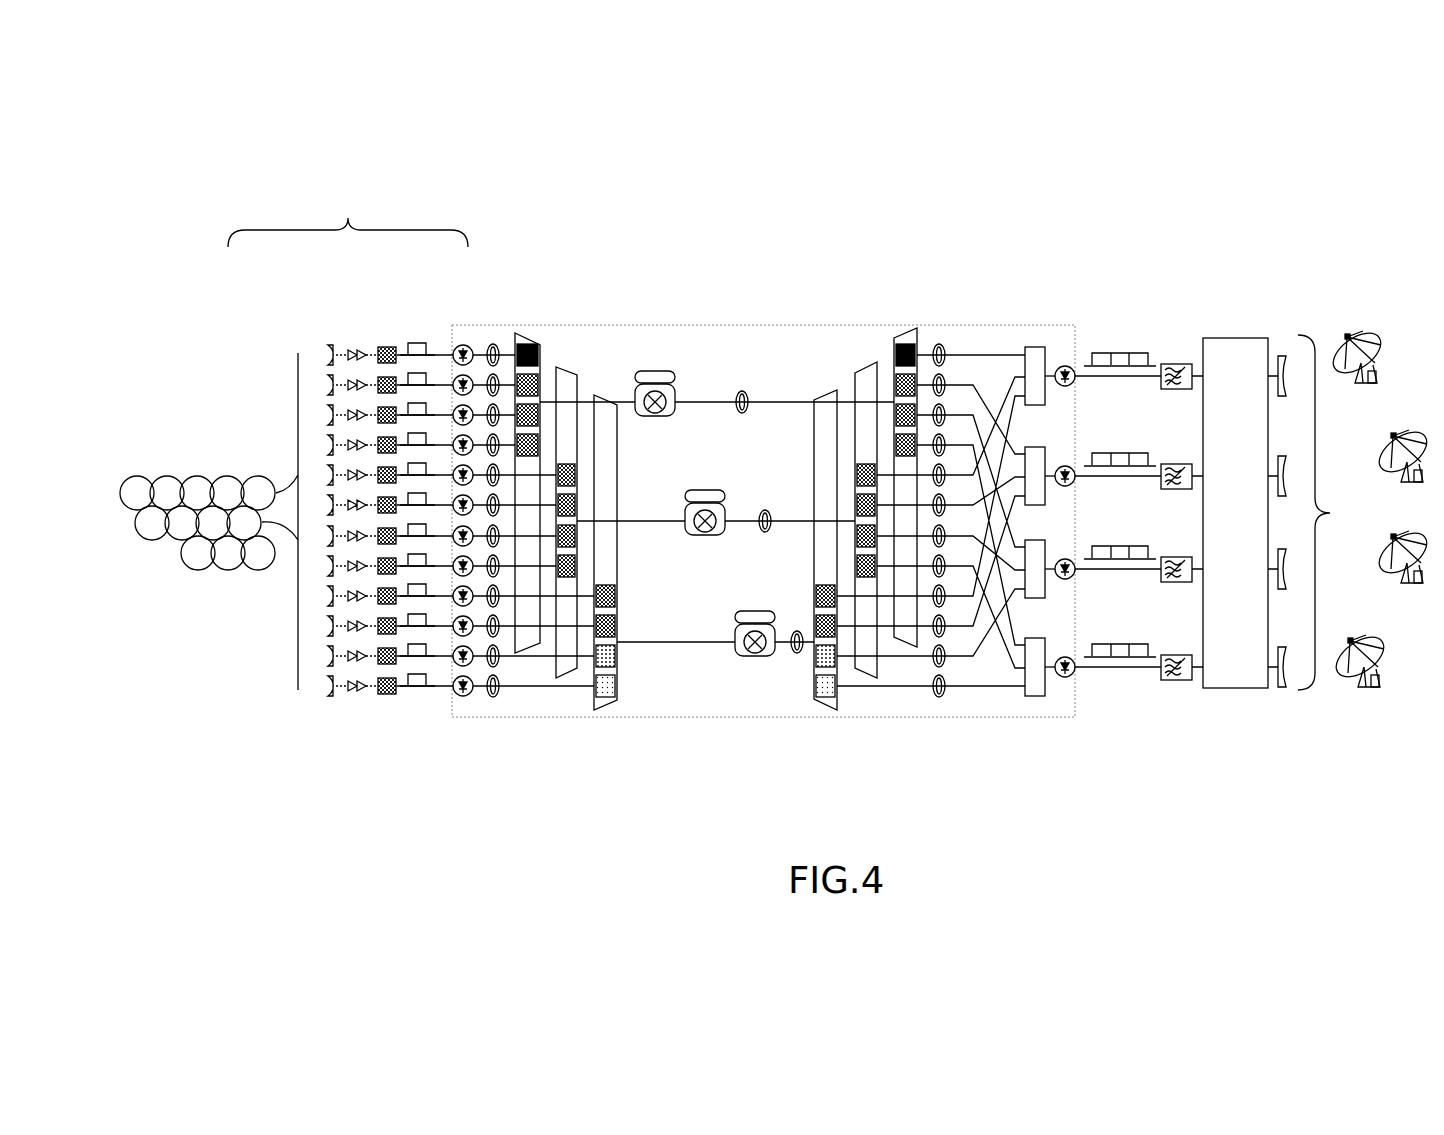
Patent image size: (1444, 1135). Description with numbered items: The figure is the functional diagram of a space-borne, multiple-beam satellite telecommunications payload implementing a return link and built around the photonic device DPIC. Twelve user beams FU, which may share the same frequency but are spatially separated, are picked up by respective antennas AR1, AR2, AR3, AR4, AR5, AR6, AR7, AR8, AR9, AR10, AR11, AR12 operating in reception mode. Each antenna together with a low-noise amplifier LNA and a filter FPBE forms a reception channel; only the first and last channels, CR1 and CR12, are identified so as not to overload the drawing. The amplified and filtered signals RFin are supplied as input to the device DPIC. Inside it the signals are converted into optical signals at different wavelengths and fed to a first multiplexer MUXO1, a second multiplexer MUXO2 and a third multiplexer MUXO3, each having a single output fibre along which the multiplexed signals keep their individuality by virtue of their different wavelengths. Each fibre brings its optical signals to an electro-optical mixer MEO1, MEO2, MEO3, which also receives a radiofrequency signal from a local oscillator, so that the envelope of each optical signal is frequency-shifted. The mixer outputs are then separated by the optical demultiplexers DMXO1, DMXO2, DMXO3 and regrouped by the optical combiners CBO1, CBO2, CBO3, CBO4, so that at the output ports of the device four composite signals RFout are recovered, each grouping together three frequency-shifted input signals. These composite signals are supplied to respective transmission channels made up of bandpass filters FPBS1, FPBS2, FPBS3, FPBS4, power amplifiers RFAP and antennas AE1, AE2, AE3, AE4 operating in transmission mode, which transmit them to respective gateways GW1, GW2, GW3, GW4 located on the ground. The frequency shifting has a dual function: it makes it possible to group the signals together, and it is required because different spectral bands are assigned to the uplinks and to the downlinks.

The user beams FU is at (180, 462).
The reception antenna AR1 is at (326, 355).
The reception antenna AR2 is at (326, 385).
The reception antenna AR3 is at (326, 415).
The reception antenna AR4 is at (326, 445).
The reception antenna AR5 is at (326, 475).
The reception antenna AR6 is at (326, 505).
The reception antenna AR7 is at (326, 536).
The reception antenna AR8 is at (326, 566).
The reception antenna AR9 is at (326, 596).
The reception antenna AR10 is at (326, 626).
The reception antenna AR11 is at (326, 656).
The reception antenna AR12 is at (326, 686).
The reception channel CR1 is at (348, 218).
The reception channel CR12 is at (415, 706).
The low noise amplifier LNA is at (352, 345).
The input band-pass filter FPBE is at (389, 344).
The input radiofrequency signal RFin is at (430, 329).
The first optical multiplexer MUXO1 is at (538, 333).
The second optical multiplexer MUXO2 is at (577, 367).
The third optical multiplexer MUXO3 is at (605, 395).
The electro-optical mixer MEO1 is at (655, 420).
The electro-optical mixer MEO2 is at (705, 537).
The electro-optical mixer MEO3 is at (755, 660).
The optical demultiplexer 1 DMXO1 is at (905, 330).
The optical demultiplexer 2 DMXO2 is at (865, 365).
The optical demultiplexer 3 DMXO3 is at (822, 396).
The optical combiner CBO1 is at (1032, 347).
The optical combiner CBO2 is at (1050, 447).
The optical combiner CBO3 is at (1050, 532).
The optical combiner 4 CBO4 is at (1050, 632).
The RF output signals RFout is at (1119, 336).
The bandpass filter FPBS1 is at (1176, 362).
The bandpass filter FPBS2 is at (1176, 463).
The bandpass filter FPBS3 is at (1176, 556).
The bandpass filter FPBS4 is at (1176, 654).
The power amplifiers RFAP is at (1235, 513).
The transmission antenna AE1 is at (1283, 355).
The transmission antenna AE2 is at (1283, 455).
The transmission antenna AE3 is at (1283, 548).
The transmission antenna AE4 is at (1283, 647).
The gateway GW1 is at (1372, 338).
The gateway GW2 is at (1385, 452).
The gateway GW3 is at (1385, 552).
The gateway GW4 is at (1372, 688).
The photonic device DPIC is at (641, 733).